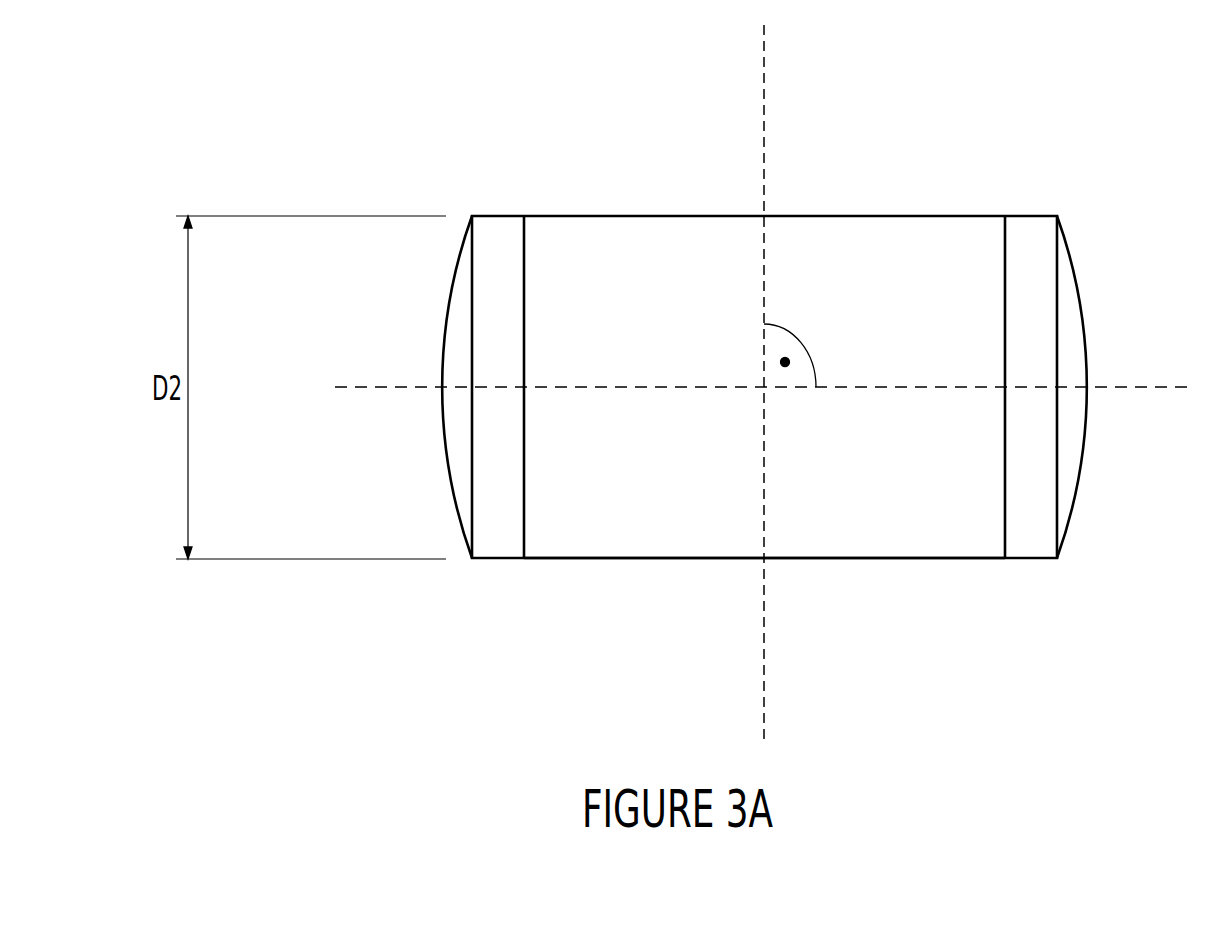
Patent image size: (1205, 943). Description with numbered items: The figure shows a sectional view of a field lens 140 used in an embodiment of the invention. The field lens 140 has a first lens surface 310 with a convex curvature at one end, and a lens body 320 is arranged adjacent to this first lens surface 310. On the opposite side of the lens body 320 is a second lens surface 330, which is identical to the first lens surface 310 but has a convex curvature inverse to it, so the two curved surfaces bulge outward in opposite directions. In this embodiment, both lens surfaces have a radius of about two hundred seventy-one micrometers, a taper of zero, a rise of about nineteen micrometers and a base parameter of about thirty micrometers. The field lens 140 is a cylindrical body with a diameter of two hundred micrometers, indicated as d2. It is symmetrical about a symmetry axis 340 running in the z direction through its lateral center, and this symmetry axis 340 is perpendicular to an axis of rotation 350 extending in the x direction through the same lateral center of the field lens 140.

The field lens 140 is at (1040, 113).
The first lens surface 310 is at (1070, 305).
The lens body 320 is at (855, 560).
The second lens surface 330 is at (450, 303).
The symmetry axis 340 is at (765, 128).
The axis of rotation 350 is at (1148, 392).